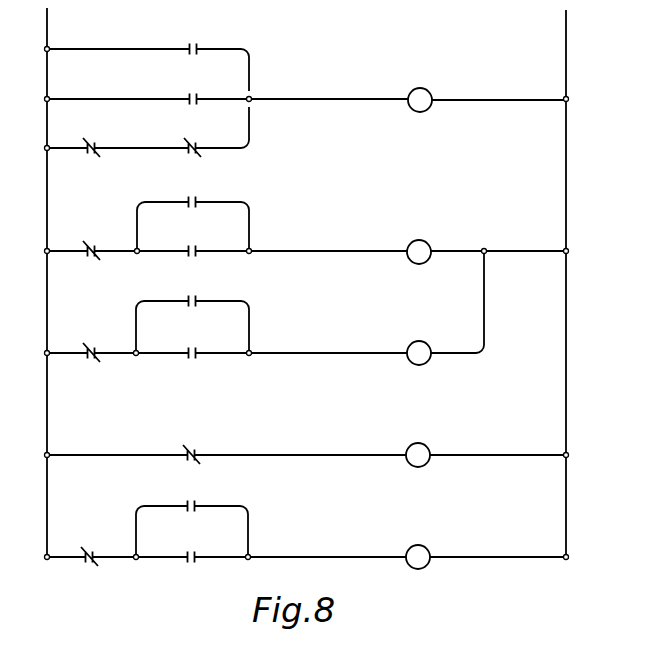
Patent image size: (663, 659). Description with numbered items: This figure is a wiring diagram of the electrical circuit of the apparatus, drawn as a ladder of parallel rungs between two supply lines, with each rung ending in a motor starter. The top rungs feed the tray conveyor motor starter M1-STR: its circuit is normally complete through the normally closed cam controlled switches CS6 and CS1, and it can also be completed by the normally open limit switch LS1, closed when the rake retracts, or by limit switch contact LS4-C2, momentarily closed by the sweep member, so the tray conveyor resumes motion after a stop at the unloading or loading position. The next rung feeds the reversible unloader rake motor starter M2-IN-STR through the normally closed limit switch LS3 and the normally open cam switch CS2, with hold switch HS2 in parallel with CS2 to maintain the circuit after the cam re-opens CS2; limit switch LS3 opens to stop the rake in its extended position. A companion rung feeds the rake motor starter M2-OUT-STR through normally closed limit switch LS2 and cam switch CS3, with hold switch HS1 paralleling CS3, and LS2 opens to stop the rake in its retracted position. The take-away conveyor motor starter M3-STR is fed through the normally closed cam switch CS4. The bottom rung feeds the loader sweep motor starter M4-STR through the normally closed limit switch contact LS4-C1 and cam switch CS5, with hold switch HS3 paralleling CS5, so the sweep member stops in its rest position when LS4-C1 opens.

The limit switch LS1 is at (148, 57).
The limit switch contact LS4-C2 is at (148, 89).
The cam switch CS6 is at (93, 139).
The cam switch CS1 is at (194, 132).
The tray conveyor motor starter M1-STR is at (487, 92).
The limit switch LS3 is at (92, 243).
The hold switch HS2 is at (193, 215).
The cam switch CS2 is at (193, 242).
The reversible unloader rake motor starter M2-IN-STR is at (484, 243).
The limit switch LS2 is at (91, 345).
The hold switch HS1 is at (192, 315).
The cam switch CS3 is at (192, 343).
The reversible unloader rake motor starter M2-OUT-STR is at (433, 308).
The cam switch CS4 is at (226, 447).
The take-away conveyor motor starter M3-STR is at (486, 446).
The limit switch contact LS4-C1 is at (91, 548).
The hold switch HS3 is at (192, 519).
The cam switch CS5 is at (192, 547).
The loader sweep motor starter M4-STR is at (486, 548).